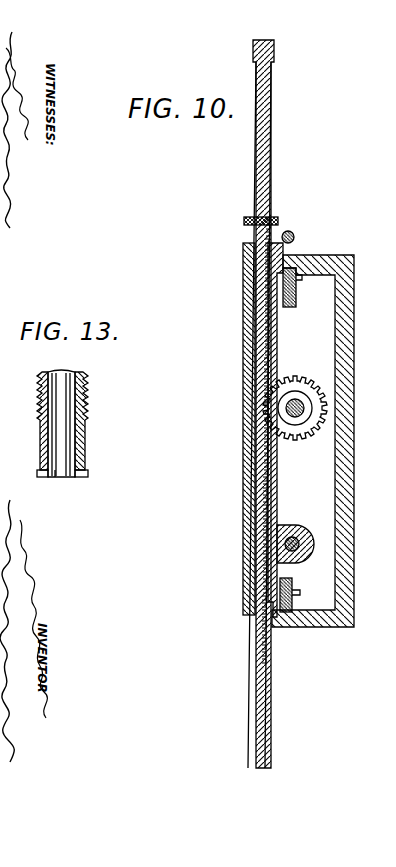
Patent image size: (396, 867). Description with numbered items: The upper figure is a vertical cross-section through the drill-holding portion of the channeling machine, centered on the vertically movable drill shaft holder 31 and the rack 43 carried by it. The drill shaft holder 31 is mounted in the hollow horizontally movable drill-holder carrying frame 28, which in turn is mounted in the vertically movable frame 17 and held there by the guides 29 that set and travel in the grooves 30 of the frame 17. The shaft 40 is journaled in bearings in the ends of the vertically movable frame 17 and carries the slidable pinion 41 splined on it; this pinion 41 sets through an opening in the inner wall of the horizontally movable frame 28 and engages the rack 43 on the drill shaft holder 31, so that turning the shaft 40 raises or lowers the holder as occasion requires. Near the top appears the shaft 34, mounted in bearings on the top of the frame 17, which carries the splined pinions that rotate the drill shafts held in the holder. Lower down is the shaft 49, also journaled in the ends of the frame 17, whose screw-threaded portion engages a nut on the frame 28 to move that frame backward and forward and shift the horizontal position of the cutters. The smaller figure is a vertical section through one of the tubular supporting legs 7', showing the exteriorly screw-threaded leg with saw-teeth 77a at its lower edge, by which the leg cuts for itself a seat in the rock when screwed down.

In FIG. 10, the vertically movable drill shaft holder 31 is at (274, 50).
In FIG. 10, the rack 43 is at (272, 238).
In FIG. 10, the shaft 34 is at (294, 236).
In FIG. 10, the horizontally movable drill-holder carrying frame 28 is at (244, 280).
In FIG. 10, the grooves 30 is at (298, 280).
In FIG. 10, the guides 29 is at (288, 306).
In FIG. 10, the vertically movable frame 17 is at (338, 470).
In FIG. 10, the pinion 41 is at (276, 396).
In FIG. 10, the shaft 40 is at (288, 410).
In FIG. 10, the shaft 49 is at (294, 538).
In FIG. 13, the threaded sleeve 7' is at (77, 423).
In FIG. 13, the saw-teeth 77a is at (54, 472).